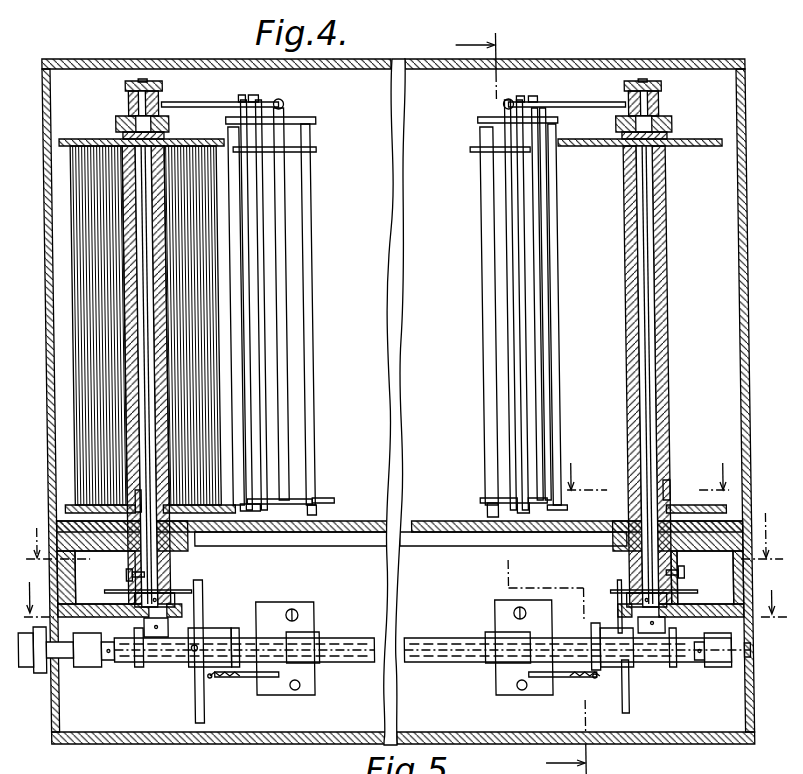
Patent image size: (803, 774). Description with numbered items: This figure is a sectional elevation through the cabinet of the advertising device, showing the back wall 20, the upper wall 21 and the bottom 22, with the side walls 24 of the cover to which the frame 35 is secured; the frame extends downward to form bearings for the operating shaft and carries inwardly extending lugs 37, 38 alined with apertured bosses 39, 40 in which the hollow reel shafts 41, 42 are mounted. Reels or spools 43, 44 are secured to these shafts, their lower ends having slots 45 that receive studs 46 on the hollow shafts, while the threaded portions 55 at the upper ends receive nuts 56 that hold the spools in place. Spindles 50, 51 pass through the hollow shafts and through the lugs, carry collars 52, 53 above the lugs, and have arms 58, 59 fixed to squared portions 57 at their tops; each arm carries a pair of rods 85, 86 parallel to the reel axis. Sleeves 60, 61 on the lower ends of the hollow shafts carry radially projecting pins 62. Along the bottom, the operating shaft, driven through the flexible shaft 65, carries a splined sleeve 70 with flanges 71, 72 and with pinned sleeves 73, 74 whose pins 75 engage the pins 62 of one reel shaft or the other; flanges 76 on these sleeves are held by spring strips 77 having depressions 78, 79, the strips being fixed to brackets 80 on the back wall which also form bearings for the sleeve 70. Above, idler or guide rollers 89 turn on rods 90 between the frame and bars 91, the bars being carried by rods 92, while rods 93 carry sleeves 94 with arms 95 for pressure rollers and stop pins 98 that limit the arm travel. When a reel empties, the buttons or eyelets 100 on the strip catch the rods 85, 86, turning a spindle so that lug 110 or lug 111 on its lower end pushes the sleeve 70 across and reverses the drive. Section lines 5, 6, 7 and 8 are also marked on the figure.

The back wall 20 is at (372, 80).
The upper wall 21 is at (172, 59).
The bottom 22 is at (140, 745).
The side walls 24 is at (41, 243).
The frame 35 is at (362, 504).
The inwardly extending lug 37 is at (82, 612).
The inwardly extending lug 38 is at (700, 600).
The apertured boss 39 is at (172, 552).
The apertured boss 40 is at (616, 553).
The hollow reel shaft 41 is at (130, 327).
The hollow reel shaft 42 is at (652, 432).
The reel or spool 43 is at (122, 402).
The reel or spool 44 is at (660, 358).
The slot 45 is at (124, 508).
The stud 46 is at (126, 490).
The spindle 50 is at (136, 273).
The spindle 51 is at (632, 304).
The collar 52 is at (168, 600).
The collar 53 is at (634, 600).
The threaded portion 55 is at (165, 134).
The nut 56 is at (115, 122).
The squared portion 57 is at (158, 100).
The arm 58 is at (213, 102).
The arm 59 is at (569, 102).
The sleeve 60 is at (172, 572).
The sleeve 61 is at (617, 567).
The arm or pin 62 is at (106, 589).
The flexible shaft 65 is at (20, 676).
The sleeve 70 is at (334, 638).
The flange 71 is at (132, 670).
The flange 72 is at (664, 668).
The sleeve 73 is at (214, 632).
The sleeve 74 is at (609, 686).
The pin 75 is at (194, 708).
The flange 76 is at (232, 672).
The spring strip 77 is at (262, 680).
The depression 78 is at (570, 680).
The depression 79 is at (400, 692).
The bracket 80 is at (306, 677).
The rod 85 is at (244, 185).
The rod 86 is at (258, 193).
The idler roller or guide roller 89 is at (240, 410).
The rod 90 is at (239, 535).
The bar 91 is at (287, 118).
The rod 92 is at (280, 205).
The rod 93 is at (316, 121).
The sleeve 94 is at (310, 325).
The arm 95 is at (313, 151).
The stop pin 98 is at (260, 96).
The button or eyelet 100 is at (554, 170).
The lug 110 is at (150, 640).
The lug 111 is at (644, 636).
The section line 5 is at (403, 526).
The section line 6 is at (520, 399).
The section line 7 is at (405, 597).
The section line 8 is at (648, 476).